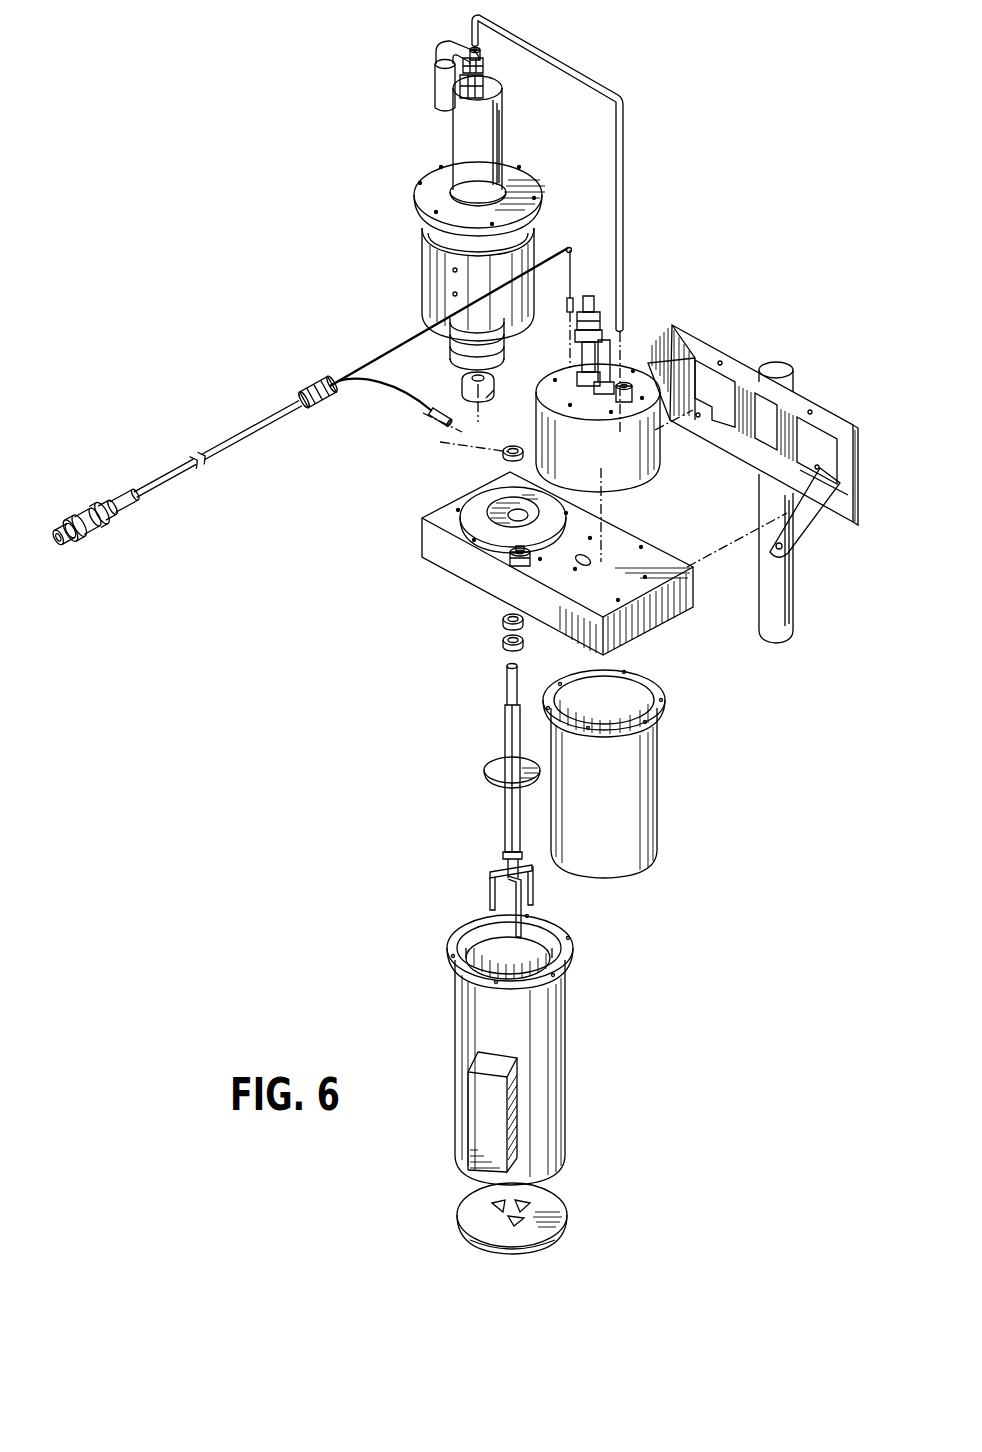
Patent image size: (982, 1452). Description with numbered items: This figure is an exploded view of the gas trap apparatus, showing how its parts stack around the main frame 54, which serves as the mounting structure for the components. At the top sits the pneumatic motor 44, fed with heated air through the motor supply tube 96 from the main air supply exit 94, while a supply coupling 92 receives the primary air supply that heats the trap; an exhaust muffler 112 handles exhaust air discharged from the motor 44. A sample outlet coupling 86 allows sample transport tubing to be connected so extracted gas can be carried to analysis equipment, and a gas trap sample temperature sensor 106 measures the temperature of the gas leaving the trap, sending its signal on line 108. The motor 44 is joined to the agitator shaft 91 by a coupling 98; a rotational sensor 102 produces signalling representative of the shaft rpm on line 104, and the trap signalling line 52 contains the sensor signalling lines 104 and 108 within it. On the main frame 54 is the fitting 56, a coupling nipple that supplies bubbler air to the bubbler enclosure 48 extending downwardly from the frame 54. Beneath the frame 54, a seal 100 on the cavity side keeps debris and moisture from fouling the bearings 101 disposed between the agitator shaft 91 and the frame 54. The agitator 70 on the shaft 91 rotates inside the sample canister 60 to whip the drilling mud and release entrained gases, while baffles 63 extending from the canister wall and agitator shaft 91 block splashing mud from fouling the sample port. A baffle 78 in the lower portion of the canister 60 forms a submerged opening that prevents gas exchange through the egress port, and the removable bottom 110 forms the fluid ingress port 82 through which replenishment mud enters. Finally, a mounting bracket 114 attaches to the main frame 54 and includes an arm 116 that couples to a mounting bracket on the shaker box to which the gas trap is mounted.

The pneumatic motor 44 is at (460, 136).
The bubbler enclosure 48 is at (652, 752).
The trap signalling line 52 is at (155, 485).
The main frame 54 is at (432, 538).
The fitting 56 is at (510, 555).
The sample canister 60 is at (562, 1025).
The baffles 63 is at (490, 778).
The agitator 70 is at (537, 890).
The baffle 78 is at (482, 1098).
The ingress port 82 is at (527, 1240).
The sample outlet coupling 86 is at (606, 404).
The agitator shaft 91 is at (506, 735).
The supply coupling 92 is at (600, 318).
The main air supply exit 94 is at (672, 365).
The motor supply tube 96 is at (620, 88).
The coupling 98 is at (440, 318).
The seal 100 is at (503, 622).
The bearings 101 is at (513, 446).
The rotational sensor 102 is at (426, 415).
The line 104 is at (400, 398).
The gas trap sample temperature sensor 106 is at (572, 296).
The line 108 is at (372, 358).
The removable bottom 110 is at (548, 1198).
The exhaust muffler 112 is at (436, 96).
The mounting bracket 114 is at (843, 503).
The arm 116 is at (792, 613).